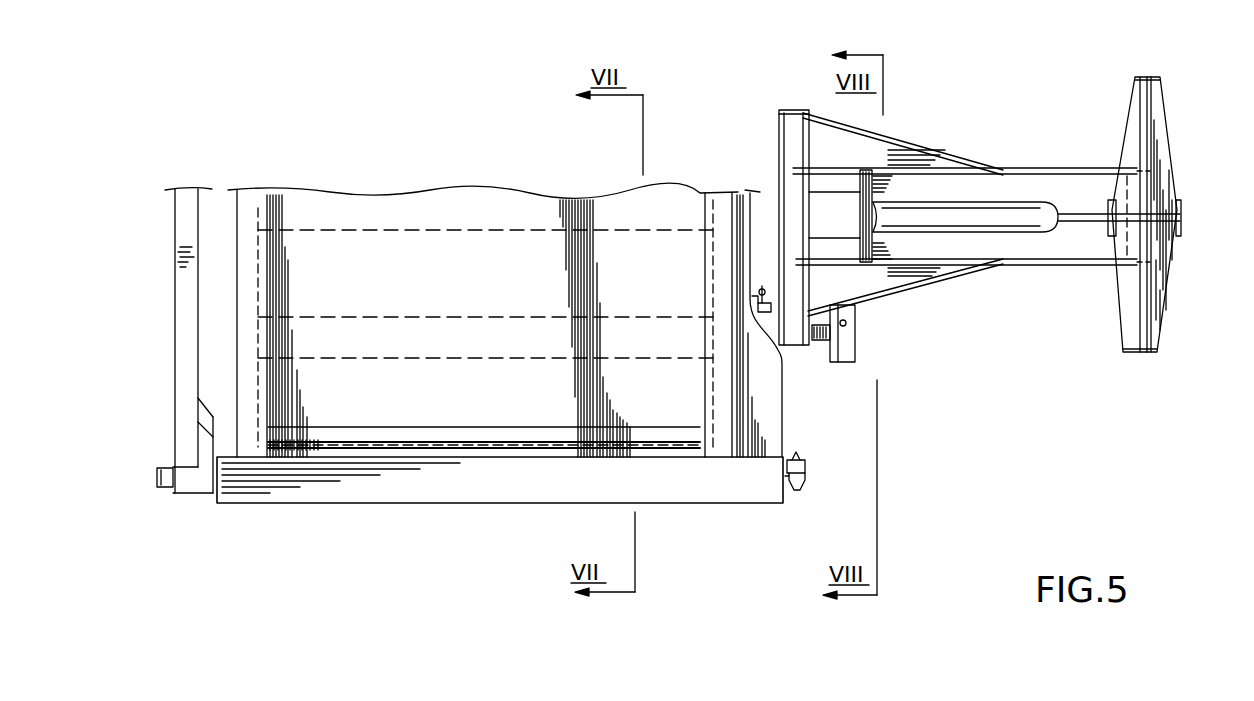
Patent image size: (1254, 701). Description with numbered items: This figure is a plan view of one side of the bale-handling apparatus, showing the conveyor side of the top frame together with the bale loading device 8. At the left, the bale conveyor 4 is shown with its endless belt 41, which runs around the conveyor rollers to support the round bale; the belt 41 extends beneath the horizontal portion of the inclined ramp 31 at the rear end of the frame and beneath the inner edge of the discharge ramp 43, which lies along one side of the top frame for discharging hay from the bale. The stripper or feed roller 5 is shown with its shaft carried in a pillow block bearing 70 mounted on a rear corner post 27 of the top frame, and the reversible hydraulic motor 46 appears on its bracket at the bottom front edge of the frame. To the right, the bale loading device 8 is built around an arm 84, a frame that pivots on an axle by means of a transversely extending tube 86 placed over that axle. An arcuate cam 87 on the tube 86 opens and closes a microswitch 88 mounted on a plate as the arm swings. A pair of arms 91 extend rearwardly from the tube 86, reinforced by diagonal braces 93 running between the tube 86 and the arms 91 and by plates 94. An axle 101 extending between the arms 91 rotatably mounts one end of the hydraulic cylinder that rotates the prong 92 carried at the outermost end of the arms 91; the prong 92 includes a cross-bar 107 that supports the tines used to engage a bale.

The bale conveyor 4 is at (620, 200).
The endless belt 41 is at (489, 285).
The discharge ramp 43 is at (362, 450).
The stripper or feed roller 5 is at (481, 478).
The reversible hydraulic motor 46 is at (162, 492).
The inclined ramp 31 is at (760, 380).
The rear corner post 27 is at (805, 468).
The pillow block bearing 70 is at (800, 487).
The arcuate cam 87 is at (760, 284).
The microswitch 88 is at (755, 291).
The tube 86 is at (790, 135).
The bale loading device 8 is at (1053, 118).
The diagonal brace 93 is at (960, 165).
The arm 91 is at (1088, 167).
The axle 101 is at (862, 186).
The plate 94 is at (915, 160).
The arm 84 is at (1000, 266).
The prong 92 is at (1168, 113).
The cross-bar 107 is at (1160, 155).